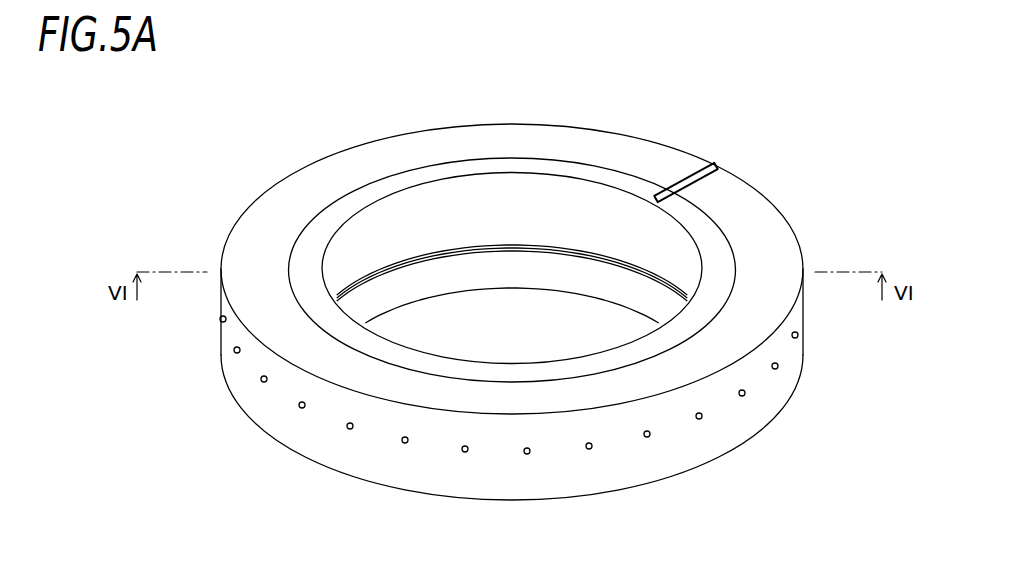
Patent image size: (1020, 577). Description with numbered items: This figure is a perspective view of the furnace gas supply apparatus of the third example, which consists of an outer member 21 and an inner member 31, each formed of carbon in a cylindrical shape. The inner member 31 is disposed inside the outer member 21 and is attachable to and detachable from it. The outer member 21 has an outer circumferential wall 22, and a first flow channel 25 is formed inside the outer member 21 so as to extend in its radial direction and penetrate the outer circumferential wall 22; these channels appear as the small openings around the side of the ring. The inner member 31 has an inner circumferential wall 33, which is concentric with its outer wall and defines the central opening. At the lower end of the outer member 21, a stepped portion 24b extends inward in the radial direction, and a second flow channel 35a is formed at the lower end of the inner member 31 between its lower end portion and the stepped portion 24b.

The outer member 21 is at (762, 193).
The outer circumferential wall 22 is at (668, 458).
The stepped portion 24b is at (366, 302).
The first flow channel 25 is at (523, 451).
The inner member 31 is at (330, 200).
The inner circumferential wall 33 is at (576, 196).
The second flow channel 35a is at (440, 250).